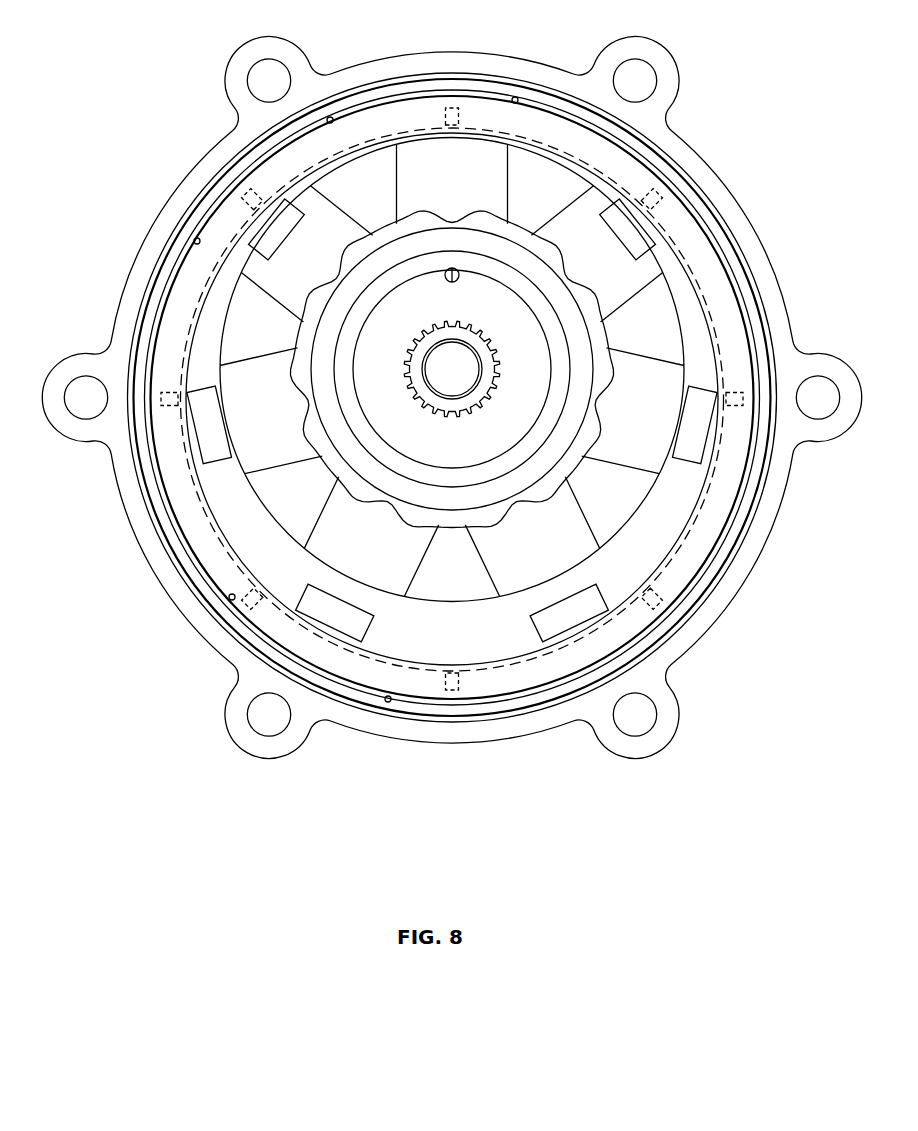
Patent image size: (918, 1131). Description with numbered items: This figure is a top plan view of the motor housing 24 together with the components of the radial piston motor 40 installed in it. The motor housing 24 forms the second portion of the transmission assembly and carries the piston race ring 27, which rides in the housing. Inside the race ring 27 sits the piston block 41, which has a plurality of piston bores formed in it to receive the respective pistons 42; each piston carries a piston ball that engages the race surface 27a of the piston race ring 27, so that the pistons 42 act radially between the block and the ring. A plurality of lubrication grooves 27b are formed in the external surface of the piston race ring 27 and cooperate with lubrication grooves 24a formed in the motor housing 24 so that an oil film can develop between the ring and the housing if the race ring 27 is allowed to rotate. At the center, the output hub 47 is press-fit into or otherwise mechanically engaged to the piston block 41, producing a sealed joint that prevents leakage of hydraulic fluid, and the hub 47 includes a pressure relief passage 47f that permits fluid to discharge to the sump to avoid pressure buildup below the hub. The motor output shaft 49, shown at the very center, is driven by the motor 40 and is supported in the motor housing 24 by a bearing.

The motor housing 24 is at (456, 48).
The lubrication grooves 24a is at (249, 612).
The piston race ring 27 is at (224, 222).
The race surface 27a is at (517, 662).
The lubrication grooves 27b is at (192, 242).
The radial piston motor 40 is at (236, 497).
The piston block 41 is at (243, 337).
The pistons 42 is at (299, 569).
The output hub 47 is at (375, 350).
The pressure relief passage 47f is at (452, 283).
The motor output shaft 49 is at (439, 382).